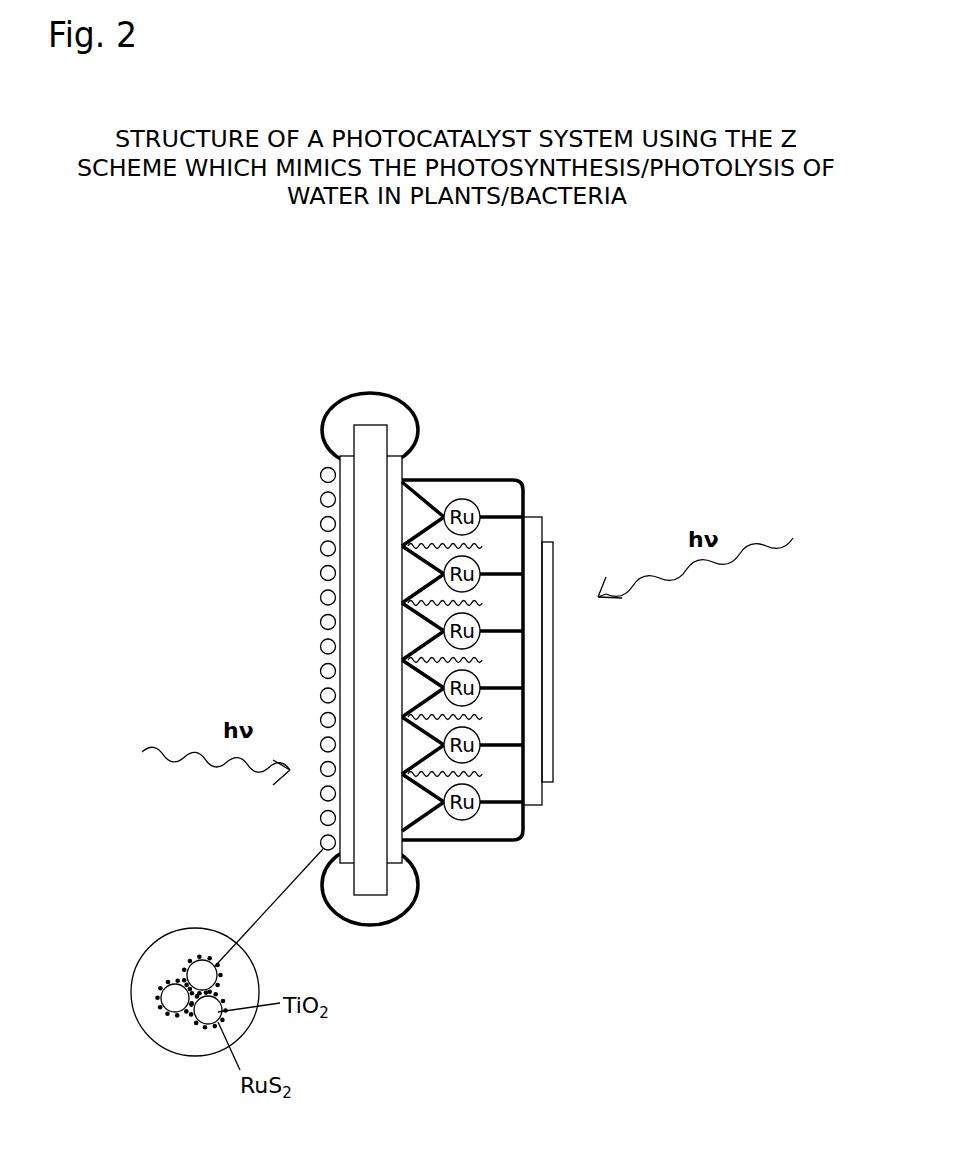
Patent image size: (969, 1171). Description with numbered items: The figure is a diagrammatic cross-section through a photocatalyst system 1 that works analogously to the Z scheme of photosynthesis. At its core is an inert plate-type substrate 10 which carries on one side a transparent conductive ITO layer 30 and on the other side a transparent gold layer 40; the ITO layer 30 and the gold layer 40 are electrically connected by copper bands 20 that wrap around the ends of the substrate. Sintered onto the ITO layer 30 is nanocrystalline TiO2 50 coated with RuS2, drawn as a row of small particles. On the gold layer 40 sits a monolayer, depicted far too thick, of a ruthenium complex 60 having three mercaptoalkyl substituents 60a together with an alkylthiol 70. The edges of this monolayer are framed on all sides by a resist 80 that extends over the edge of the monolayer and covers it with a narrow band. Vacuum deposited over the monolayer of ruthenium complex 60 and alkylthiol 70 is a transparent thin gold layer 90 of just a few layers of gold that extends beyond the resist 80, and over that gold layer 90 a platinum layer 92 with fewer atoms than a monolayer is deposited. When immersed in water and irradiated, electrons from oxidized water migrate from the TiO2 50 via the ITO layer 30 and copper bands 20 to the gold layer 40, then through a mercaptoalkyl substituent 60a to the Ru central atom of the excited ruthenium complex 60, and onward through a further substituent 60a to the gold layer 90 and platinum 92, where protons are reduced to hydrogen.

The photocatalyst system 1 is at (240, 665).
The inert plate-type substrate 10 is at (372, 440).
The copper bands 20 is at (415, 408).
The ITO layer 30 is at (340, 831).
The gold layer 40 is at (390, 847).
The nanocrystalline TiO2 coated with RuS2 50 is at (321, 474).
The ruthenium complex 60 is at (470, 503).
The mercaptoalkyl substituents 60a is at (500, 518).
The alkylthiol 70 is at (522, 655).
The resist 80 is at (458, 478).
The thin gold layer 90 is at (532, 688).
The platinum layer 92 is at (553, 558).